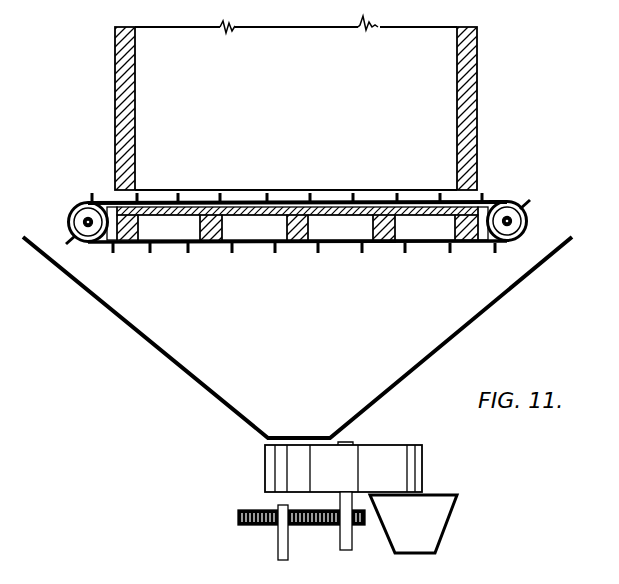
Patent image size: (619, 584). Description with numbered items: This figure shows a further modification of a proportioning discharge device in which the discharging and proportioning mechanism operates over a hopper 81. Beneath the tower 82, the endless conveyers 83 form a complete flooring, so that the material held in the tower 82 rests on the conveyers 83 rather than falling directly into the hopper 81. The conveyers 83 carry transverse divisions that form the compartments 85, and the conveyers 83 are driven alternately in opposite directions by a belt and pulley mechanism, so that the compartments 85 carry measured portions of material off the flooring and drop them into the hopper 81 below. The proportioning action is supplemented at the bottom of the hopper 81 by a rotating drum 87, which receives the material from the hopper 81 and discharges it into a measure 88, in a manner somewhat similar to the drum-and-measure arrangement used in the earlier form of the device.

The hopper 81 is at (183, 364).
The tower 82 is at (118, 141).
The endless conveyers 83 is at (298, 242).
The compartments 85 is at (162, 198).
The rotating drum 87 is at (393, 471).
The measure 88 is at (424, 530).